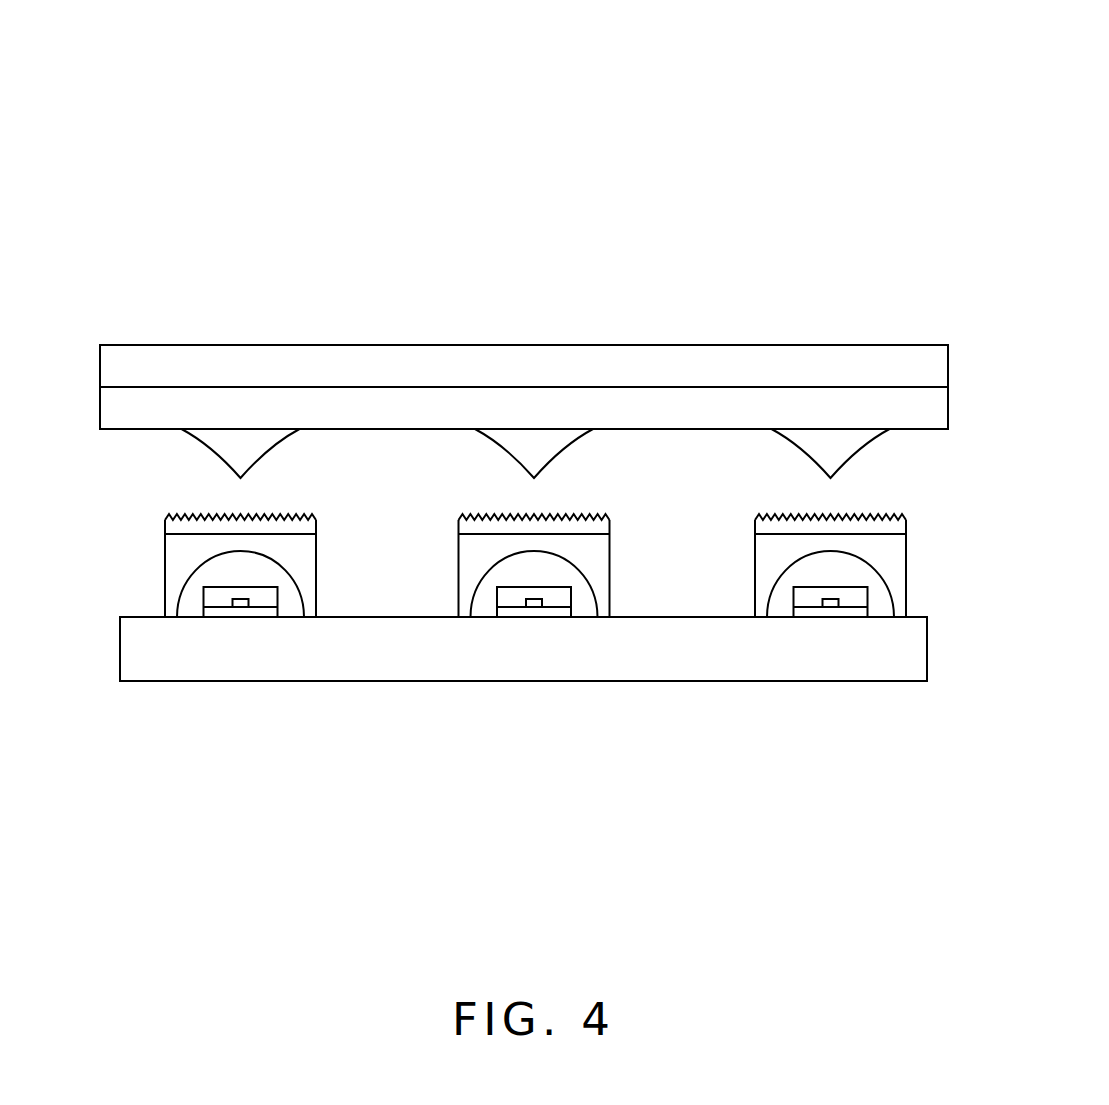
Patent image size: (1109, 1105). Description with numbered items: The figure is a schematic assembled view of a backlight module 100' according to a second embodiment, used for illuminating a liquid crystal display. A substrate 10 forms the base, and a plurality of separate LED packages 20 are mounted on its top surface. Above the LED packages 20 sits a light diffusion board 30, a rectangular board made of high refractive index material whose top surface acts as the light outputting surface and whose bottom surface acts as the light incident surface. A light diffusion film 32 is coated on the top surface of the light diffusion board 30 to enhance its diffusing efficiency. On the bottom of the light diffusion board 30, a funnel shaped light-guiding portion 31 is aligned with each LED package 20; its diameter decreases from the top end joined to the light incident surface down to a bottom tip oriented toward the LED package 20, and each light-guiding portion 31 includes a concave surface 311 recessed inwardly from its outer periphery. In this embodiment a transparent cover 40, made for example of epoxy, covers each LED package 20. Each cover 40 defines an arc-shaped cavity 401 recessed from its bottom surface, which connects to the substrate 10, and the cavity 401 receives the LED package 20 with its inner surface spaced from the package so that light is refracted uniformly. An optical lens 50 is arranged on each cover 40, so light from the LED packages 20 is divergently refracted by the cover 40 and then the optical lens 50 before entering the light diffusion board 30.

The backlight module 100' is at (534, 441).
The substrate 10 is at (338, 658).
The LED package 20 is at (218, 600).
The light diffusion board 30 is at (898, 408).
The light-guiding portion 31 is at (835, 448).
The concave surface 311 is at (802, 447).
The light diffusion film 32 is at (624, 357).
The cover 40 is at (180, 553).
The cavity 401 is at (187, 602).
The optical lens 50 is at (193, 520).